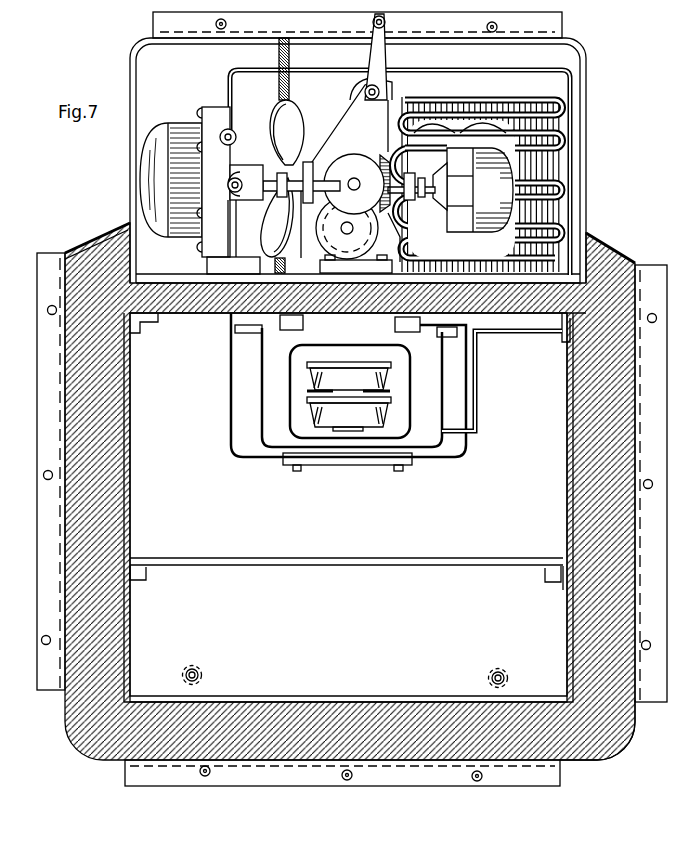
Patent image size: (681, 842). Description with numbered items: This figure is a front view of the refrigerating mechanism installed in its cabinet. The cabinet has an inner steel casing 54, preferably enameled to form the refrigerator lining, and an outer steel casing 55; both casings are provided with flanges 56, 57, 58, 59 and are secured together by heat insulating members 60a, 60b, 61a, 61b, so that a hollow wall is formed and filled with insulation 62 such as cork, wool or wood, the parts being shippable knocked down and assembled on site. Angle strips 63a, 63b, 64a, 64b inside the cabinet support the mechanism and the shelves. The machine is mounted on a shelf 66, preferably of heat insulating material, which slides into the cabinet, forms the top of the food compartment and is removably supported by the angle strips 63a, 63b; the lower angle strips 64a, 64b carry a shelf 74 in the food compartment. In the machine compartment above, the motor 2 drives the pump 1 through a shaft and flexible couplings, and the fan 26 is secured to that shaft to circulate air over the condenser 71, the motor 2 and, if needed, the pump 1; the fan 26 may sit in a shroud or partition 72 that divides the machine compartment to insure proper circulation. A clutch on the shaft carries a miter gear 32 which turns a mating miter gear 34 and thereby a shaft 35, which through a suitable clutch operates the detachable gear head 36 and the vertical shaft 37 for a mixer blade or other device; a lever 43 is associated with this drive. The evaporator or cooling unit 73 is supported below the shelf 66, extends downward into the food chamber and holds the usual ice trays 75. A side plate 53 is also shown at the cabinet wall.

The pump 1 is at (171, 128).
The motor 2 is at (460, 189).
The fan 26 is at (297, 118).
The miter gear 32 is at (410, 214).
The miter gear 34 is at (378, 168).
The shaft 35 is at (354, 188).
The detachable gear head 36 is at (293, 160).
The vertical shaft 37 is at (290, 163).
The lever 43 is at (389, 53).
The left side plate 53 is at (32, 471).
The inner steel casing 54 is at (130, 522).
The outer steel casing 55 is at (101, 239).
The flange 56 is at (570, 24).
The flange 57 is at (140, 769).
The flange 58 is at (45, 433).
The flange 59 is at (648, 275).
The heat insulating member 60a is at (603, 592).
The heat insulating member 60b is at (133, 602).
The heat insulating member 61a is at (201, 668).
The heat insulating member 61b is at (506, 677).
The insulation 62 is at (604, 745).
The angle strip 63a is at (150, 322).
The angle strip 63b is at (562, 338).
The angle strip 64a is at (147, 574).
The angle strip 64b is at (558, 581).
The shelf 66 is at (210, 317).
The condenser 71 is at (552, 172).
The shroud or partition 72 is at (292, 60).
The evaporator or cooling unit 73 is at (433, 455).
The shelf 74 is at (346, 539).
The ice tray 75 is at (320, 418).